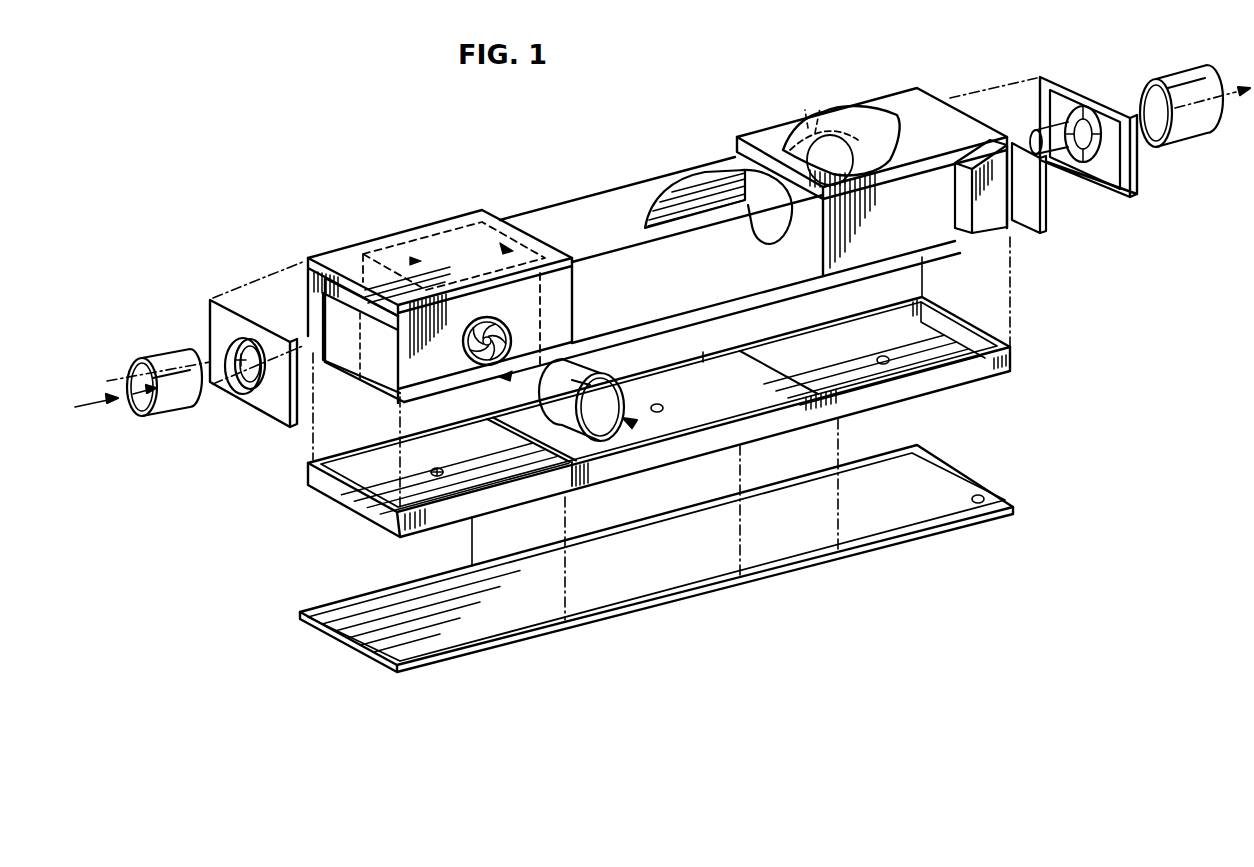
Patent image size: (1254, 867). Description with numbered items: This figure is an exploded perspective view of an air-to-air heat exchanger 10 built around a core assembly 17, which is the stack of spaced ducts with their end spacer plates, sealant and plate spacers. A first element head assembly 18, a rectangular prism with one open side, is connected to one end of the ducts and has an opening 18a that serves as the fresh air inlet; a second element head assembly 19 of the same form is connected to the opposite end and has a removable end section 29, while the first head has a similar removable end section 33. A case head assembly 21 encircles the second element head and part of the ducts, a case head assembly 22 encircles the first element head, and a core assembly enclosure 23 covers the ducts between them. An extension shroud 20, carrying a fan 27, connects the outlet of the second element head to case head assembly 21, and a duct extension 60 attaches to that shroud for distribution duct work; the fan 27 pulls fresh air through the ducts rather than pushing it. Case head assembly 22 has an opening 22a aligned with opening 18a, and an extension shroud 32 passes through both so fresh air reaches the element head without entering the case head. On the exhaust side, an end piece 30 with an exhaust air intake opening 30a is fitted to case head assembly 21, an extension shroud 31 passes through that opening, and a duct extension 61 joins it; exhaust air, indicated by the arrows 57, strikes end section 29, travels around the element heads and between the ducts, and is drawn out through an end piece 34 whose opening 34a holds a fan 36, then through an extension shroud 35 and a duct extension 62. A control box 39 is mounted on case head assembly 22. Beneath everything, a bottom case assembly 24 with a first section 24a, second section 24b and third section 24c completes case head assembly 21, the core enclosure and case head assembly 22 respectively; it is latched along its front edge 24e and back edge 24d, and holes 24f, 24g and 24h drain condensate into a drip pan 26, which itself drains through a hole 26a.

The air-to-air heat exchanger 10 is at (519, 160).
The core assembly 17 is at (683, 203).
The first element head assembly 18 is at (882, 133).
The opening 18a is at (783, 131).
The second element head assembly 19 is at (412, 242).
The extension shroud 20 is at (462, 346).
The case head assembly 21 is at (348, 254).
The case head assembly 22 is at (916, 95).
The opening 22a is at (845, 130).
The core assembly enclosure 23 is at (588, 207).
The bottom case assembly 24 is at (640, 462).
The first section 24a is at (496, 471).
The second section 24b is at (721, 401).
The third section 24c is at (943, 357).
The back edge 24d is at (690, 362).
The front edge 24e is at (777, 418).
The hole 24f is at (437, 468).
The hole 24g is at (658, 404).
The hole 24h is at (877, 360).
The drip pan 26 is at (926, 459).
The hole 26a is at (986, 497).
The fan 27 is at (500, 332).
The removable end section 29 is at (375, 376).
The end piece 30 is at (272, 404).
The exhaust air intake opening 30a is at (226, 352).
The extension shroud 31 is at (250, 348).
The extension shroud 32 is at (830, 130).
The end section 33 is at (1043, 226).
The end piece 34 is at (1128, 195).
The opening 34a is at (1125, 171).
The extension shroud 35 is at (1068, 110).
The fan 36 is at (1050, 122).
The control box 39 is at (982, 238).
The arrows 57 is at (405, 254).
The duct extension 60 is at (598, 374).
The duct extension 61 is at (158, 360).
The duct extension 62 is at (1168, 82).